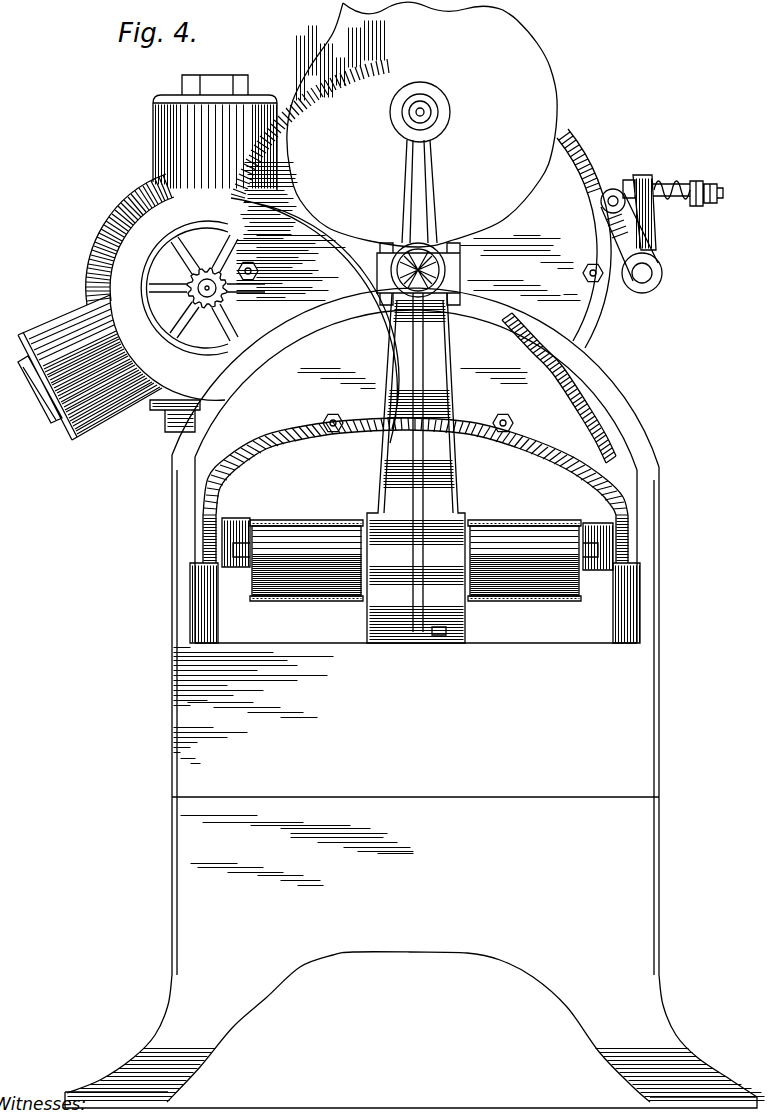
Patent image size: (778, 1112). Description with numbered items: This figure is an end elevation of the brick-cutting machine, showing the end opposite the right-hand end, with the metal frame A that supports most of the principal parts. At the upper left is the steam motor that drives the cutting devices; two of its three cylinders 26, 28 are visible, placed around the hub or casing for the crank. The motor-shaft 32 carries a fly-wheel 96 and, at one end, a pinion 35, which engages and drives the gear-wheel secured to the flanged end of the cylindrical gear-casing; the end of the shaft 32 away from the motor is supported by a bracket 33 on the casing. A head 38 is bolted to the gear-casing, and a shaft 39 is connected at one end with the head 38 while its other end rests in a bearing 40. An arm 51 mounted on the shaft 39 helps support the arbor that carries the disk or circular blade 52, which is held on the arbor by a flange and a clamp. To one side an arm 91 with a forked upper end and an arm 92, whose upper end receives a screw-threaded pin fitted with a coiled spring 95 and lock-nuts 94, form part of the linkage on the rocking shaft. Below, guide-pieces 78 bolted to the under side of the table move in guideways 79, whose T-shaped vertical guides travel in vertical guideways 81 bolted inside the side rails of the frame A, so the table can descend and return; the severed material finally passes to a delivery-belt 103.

The frame A is at (415, 698).
The cylinder 26 is at (215, 132).
The cylinder 28 is at (90, 367).
The shaft 32 is at (315, 251).
The bracket 33 is at (258, 276).
The pinion 35 is at (190, 348).
The head 38 is at (424, 280).
The shaft 39 is at (458, 280).
The bearing 40 is at (378, 279).
The arm 51 is at (434, 197).
The disk or circular blade 52 is at (422, 124).
The guide-pieces 78 is at (252, 558).
The guideways 79 is at (228, 570).
The vertical guideways 81 is at (190, 601).
The arm 91 is at (640, 244).
The arm 92 is at (655, 223).
The lock-nuts 94 is at (699, 210).
The coiled spring 95 is at (671, 180).
The fly-wheel 96 is at (130, 249).
The delivery-belt 103 is at (318, 520).